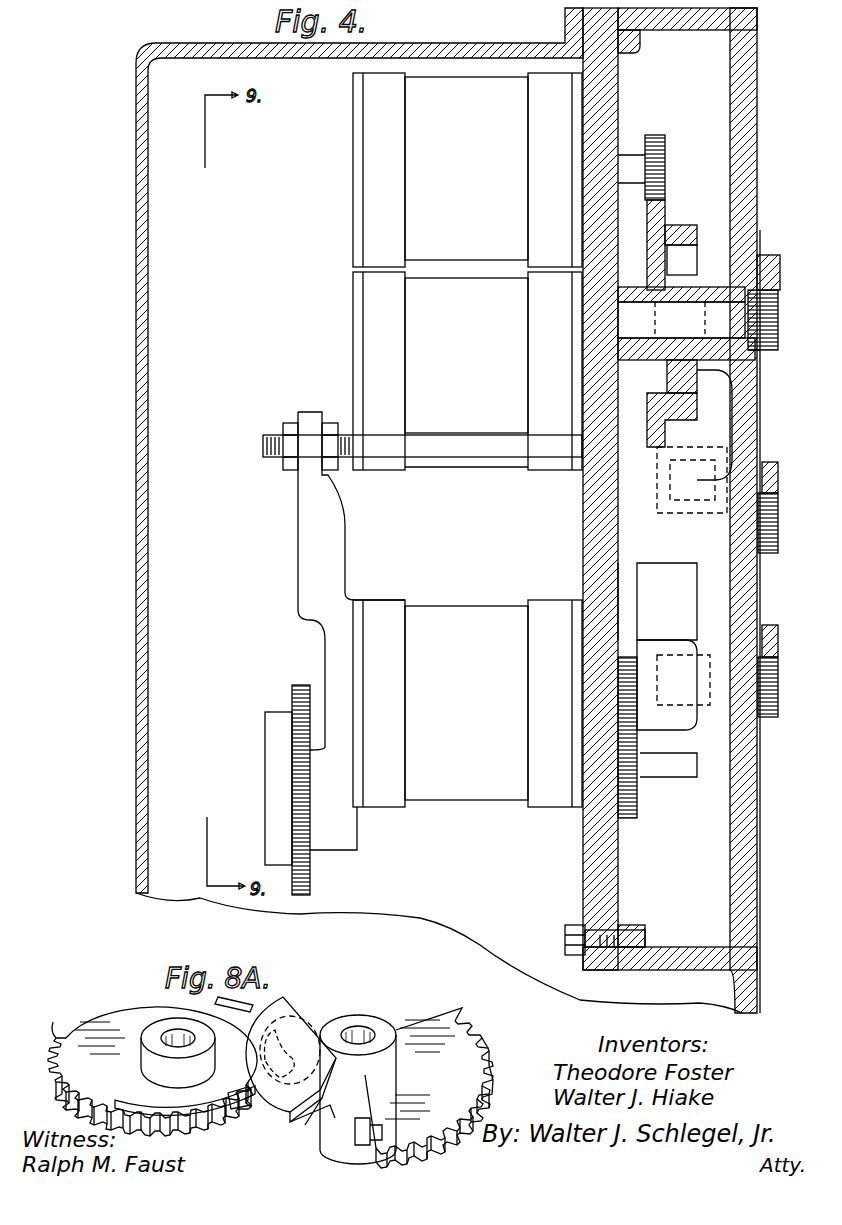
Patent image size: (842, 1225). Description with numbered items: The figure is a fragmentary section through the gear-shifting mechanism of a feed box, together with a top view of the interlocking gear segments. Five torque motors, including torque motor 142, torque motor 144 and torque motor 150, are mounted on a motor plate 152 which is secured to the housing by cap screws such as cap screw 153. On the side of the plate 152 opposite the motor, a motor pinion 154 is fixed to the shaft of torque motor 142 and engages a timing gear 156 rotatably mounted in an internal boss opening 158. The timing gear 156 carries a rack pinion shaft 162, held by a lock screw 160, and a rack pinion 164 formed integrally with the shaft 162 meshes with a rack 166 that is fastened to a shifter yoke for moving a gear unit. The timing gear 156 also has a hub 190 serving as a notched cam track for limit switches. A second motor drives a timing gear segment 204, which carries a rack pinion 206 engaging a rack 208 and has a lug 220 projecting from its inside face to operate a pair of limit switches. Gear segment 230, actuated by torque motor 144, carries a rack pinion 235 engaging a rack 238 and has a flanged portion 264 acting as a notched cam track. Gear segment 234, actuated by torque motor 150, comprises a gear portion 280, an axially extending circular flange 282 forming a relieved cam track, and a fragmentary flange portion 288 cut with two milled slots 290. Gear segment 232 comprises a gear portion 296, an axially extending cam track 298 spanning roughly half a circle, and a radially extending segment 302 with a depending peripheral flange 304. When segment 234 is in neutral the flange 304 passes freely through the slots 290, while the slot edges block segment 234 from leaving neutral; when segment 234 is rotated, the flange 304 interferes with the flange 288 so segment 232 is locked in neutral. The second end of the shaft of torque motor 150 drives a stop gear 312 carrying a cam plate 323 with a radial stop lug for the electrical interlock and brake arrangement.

In FIG. 4, the torque motor 142 is at (478, 180).
In FIG. 4, the torque motor 144 is at (480, 420).
In FIG. 4, the torque motor 150 is at (480, 775).
In FIG. 4, the motor plate 152 is at (600, 849).
In FIG. 4, the cap screw 153 is at (565, 938).
In FIG. 4, the motor pinion 154 is at (657, 135).
In FIG. 4, the timing gear 156 is at (668, 208).
In FIG. 4, the internal boss opening 158 is at (703, 280).
In FIG. 4, the lock screw 160 is at (620, 305).
In FIG. 4, the rack pinion shaft 162 is at (630, 345).
In FIG. 4, the rack pinion 164 is at (760, 350).
In FIG. 4, the rack 166 is at (770, 255).
In FIG. 4, the hub 190 is at (697, 408).
In FIG. 4, the timing gear segment 204 is at (630, 820).
In FIG. 4, the rack pinion 206 is at (770, 717).
In FIG. 4, the rack 208 is at (770, 625).
In FIG. 4, the lug 220 is at (660, 770).
In FIG. 4, the timing gear segment 230 is at (703, 589).
In FIG. 8A, the gear segment 232 is at (426, 1017).
In FIG. 8A, the gear segment 234 is at (124, 1007).
In FIG. 4, the rack pinion 235 is at (768, 553).
In FIG. 4, the rack 238 is at (769, 462).
In FIG. 4, the flanged portion 264 is at (675, 620).
In FIG. 8A, the gear portion 280 is at (53, 1035).
In FIG. 8A, the circular flange 282 is at (215, 1130).
In FIG. 8A, the fragmentary flange portion 288 is at (165, 1105).
In FIG. 8A, the milled slots 290 is at (250, 1084).
In FIG. 8A, the gear portion 296 is at (490, 1052).
In FIG. 8A, the cam track 298 is at (370, 1142).
In FIG. 8A, the radially extending segment 302 is at (310, 1022).
In FIG. 8A, the depending peripheral flange 304 is at (310, 1122).
In FIG. 4, the stop gear 312 is at (296, 685).
In FIG. 4, the cam plate 323 is at (272, 756).